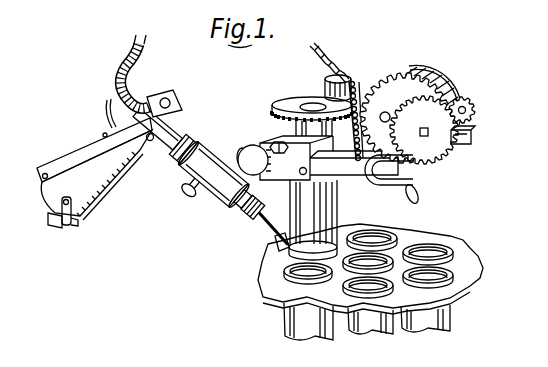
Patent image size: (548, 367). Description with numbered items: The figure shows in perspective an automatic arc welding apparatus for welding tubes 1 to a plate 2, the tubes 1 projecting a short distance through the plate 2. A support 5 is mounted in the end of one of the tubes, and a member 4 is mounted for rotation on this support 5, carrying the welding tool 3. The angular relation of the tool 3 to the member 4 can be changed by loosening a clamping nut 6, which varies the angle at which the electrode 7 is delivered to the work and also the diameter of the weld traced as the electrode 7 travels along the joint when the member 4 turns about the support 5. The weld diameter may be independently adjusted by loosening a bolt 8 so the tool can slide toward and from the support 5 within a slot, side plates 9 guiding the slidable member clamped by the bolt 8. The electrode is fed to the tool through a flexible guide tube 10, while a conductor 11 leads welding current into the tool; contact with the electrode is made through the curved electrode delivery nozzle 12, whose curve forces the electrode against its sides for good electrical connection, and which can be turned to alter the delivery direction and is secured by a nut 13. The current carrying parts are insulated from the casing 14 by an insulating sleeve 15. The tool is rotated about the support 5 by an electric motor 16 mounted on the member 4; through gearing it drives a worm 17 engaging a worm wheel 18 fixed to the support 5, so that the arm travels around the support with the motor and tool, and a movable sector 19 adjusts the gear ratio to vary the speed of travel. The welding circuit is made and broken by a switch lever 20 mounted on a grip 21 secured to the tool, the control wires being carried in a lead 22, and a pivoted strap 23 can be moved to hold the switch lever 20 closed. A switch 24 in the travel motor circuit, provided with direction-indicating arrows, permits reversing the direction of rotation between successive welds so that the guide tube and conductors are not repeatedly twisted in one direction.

The tubes 1 is at (290, 323).
The plate 2 is at (266, 298).
The welding tool 3 is at (207, 200).
The member 4 is at (350, 176).
The support 5 is at (322, 214).
The clamping nut 6 is at (256, 148).
The electrode 7 is at (278, 247).
The bolt 8 is at (275, 140).
The side plates 9 is at (298, 176).
The flexible guide tube 10 is at (117, 83).
The conductor 11 is at (143, 55).
The curved electrode delivery nozzle 12 is at (260, 236).
The nut 13 is at (248, 222).
The casing 14 is at (178, 181).
The insulating sleeve 15 is at (172, 157).
The electric motor 16 is at (430, 80).
The worm 17 is at (353, 84).
The worm wheel 18 is at (300, 101).
The movable sector 19 is at (404, 190).
The switch lever 20 is at (101, 196).
The grip 21 is at (70, 157).
The lead 22 is at (106, 110).
The pivoted strap 23 is at (60, 222).
The switch 24 is at (352, 73).